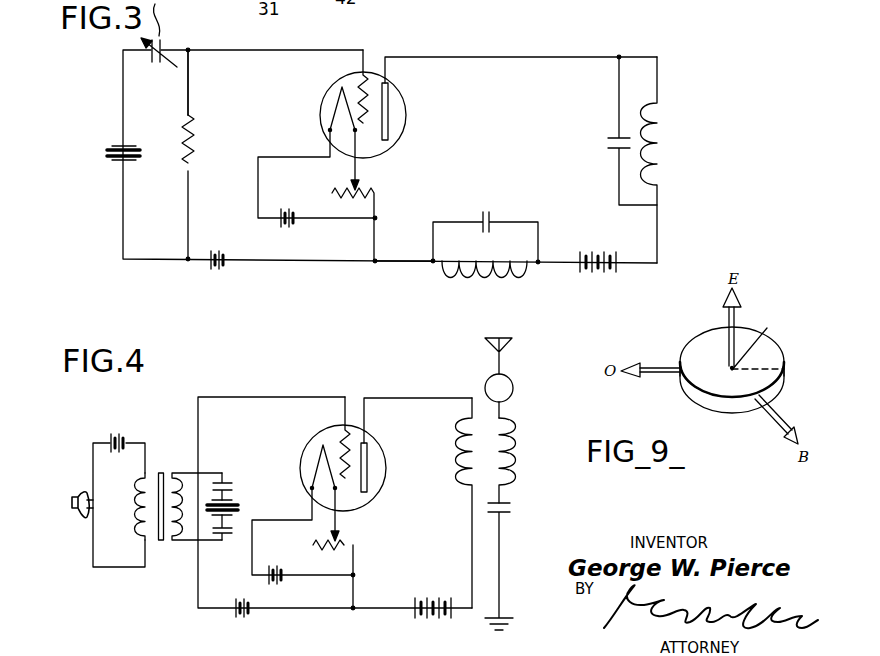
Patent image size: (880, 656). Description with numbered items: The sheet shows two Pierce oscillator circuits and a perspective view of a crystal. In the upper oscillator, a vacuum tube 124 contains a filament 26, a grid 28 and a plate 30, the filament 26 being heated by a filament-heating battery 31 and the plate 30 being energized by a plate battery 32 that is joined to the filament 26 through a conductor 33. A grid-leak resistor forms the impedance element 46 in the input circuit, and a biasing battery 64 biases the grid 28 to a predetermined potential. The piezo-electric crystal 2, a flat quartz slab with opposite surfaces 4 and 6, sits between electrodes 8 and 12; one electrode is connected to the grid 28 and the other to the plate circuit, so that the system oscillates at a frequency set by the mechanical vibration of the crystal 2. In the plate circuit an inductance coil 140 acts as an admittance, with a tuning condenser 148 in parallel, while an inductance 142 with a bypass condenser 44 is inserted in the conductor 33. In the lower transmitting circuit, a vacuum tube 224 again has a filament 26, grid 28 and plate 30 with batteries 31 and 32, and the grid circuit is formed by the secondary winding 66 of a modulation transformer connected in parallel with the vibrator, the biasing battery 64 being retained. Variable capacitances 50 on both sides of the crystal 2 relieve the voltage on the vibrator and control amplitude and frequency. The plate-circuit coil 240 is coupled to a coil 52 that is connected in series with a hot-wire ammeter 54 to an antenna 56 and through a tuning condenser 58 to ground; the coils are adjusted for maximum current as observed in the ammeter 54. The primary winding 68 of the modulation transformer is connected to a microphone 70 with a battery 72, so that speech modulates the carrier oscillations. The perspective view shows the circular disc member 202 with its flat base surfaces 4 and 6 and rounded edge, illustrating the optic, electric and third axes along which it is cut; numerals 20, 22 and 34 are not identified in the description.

In FIG. 3, the crystal 2 is at (106, 154).
In FIG. 4, the crystal 2 is at (238, 507).
In FIG. 9, the surface of the crystal 4 is at (745, 404).
In FIG. 9, the surface of the crystal 6 is at (766, 348).
In FIG. 3, the electrode 8 is at (112, 164).
In FIG. 4, the electrode 8 is at (239, 511).
In FIG. 3, the electrode 12 is at (110, 147).
In FIG. 4, the electrode 12 is at (232, 503).
In FIG. 9, the crystal plate 20 is at (750, 370).
In FIG. 9, the electric axis 22 is at (749, 329).
In FIG. 3, the filament 26 is at (330, 114).
In FIG. 4, the filament 26 is at (318, 462).
In FIG. 3, the grid 28 is at (363, 131).
In FIG. 4, the grid 28 is at (345, 486).
In FIG. 3, the plate 30 is at (390, 112).
In FIG. 4, the plate 30 is at (370, 470).
In FIG. 3, the filament-heating battery 31 is at (293, 224).
In FIG. 4, the filament-heating battery 31 is at (280, 580).
In FIG. 3, the plate battery 32 is at (616, 272).
In FIG. 4, the plate battery 32 is at (431, 597).
In FIG. 3, the conductor 33 is at (399, 259).
In FIG. 3, the conductor 34 is at (190, 82).
In FIG. 3, the bypass condenser 44 is at (487, 212).
In FIG. 3, the impedance element 46 is at (197, 140).
In FIG. 4, the variable capacitance 50 is at (224, 480).
In FIG. 4, the coil 52 is at (506, 448).
In FIG. 4, the hot-wire ammeter 54 is at (513, 392).
In FIG. 4, the antenna 56 is at (505, 346).
In FIG. 4, the tuning condenser 58 is at (500, 520).
In FIG. 3, the biasing battery 64 is at (218, 270).
In FIG. 4, the biasing battery 64 is at (243, 618).
In FIG. 4, the impedance element 66 is at (196, 498).
In FIG. 4, the primary winding 68 is at (138, 502).
In FIG. 4, the microphone 70 is at (82, 516).
In FIG. 4, the battery 72 is at (122, 440).
In FIG. 3, the vacuum tube 124 is at (332, 86).
In FIG. 3, the inductance coil 140 is at (661, 143).
In FIG. 3, the inductance 142 is at (484, 271).
In FIG. 3, the tuning condenser 148 is at (618, 140).
In FIG. 9, the circular disc member 202 is at (665, 392).
In FIG. 4, the vacuum tube 224 is at (310, 428).
In FIG. 4, the inductance coil 240 is at (468, 444).